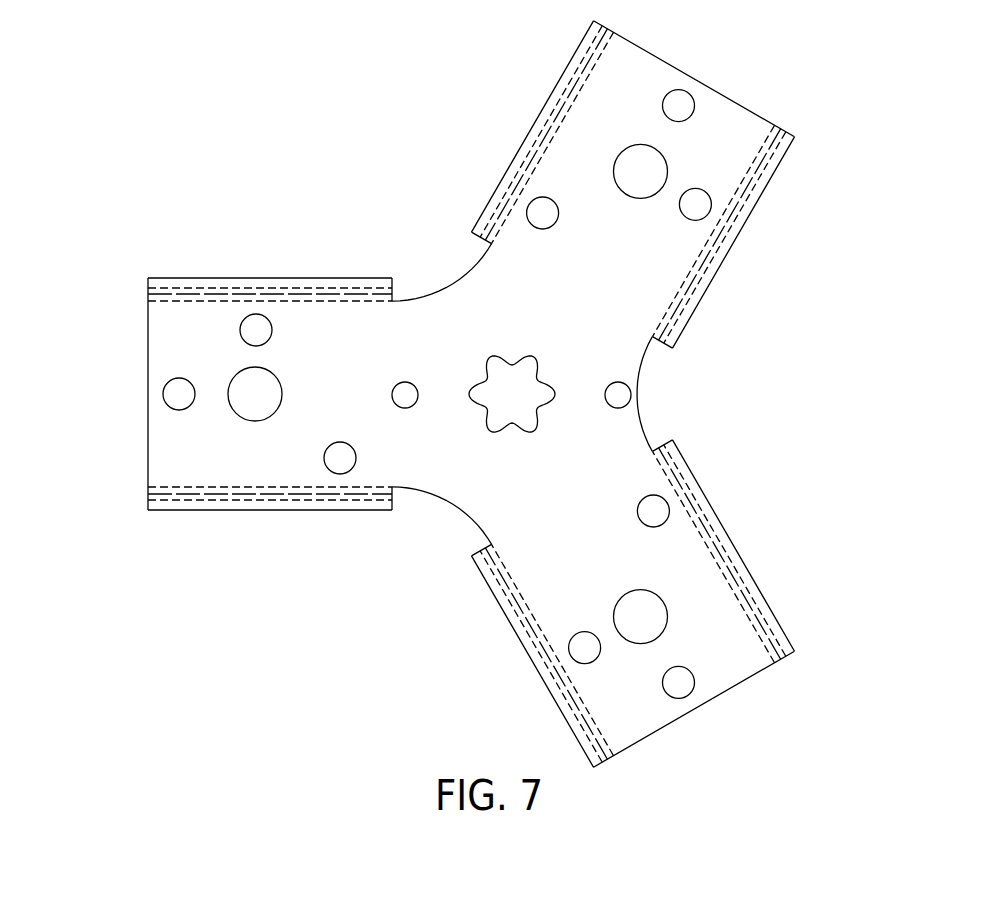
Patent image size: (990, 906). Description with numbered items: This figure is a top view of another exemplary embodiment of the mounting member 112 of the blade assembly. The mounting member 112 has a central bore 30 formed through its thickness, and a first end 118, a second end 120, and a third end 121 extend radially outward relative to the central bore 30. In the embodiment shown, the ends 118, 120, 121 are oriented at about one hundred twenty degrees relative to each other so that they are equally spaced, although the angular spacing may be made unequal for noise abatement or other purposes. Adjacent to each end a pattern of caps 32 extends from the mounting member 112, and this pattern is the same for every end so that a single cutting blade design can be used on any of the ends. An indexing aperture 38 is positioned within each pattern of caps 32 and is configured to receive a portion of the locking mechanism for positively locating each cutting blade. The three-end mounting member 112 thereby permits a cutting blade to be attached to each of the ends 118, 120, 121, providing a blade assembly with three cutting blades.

The mounting member 112 is at (488, 394).
The first end 118 is at (722, 90).
The second end 120 is at (720, 697).
The third end 121 is at (147, 438).
The indexing aperture 38 is at (275, 375).
The cap 32 is at (552, 228).
The central bore 30 is at (515, 400).